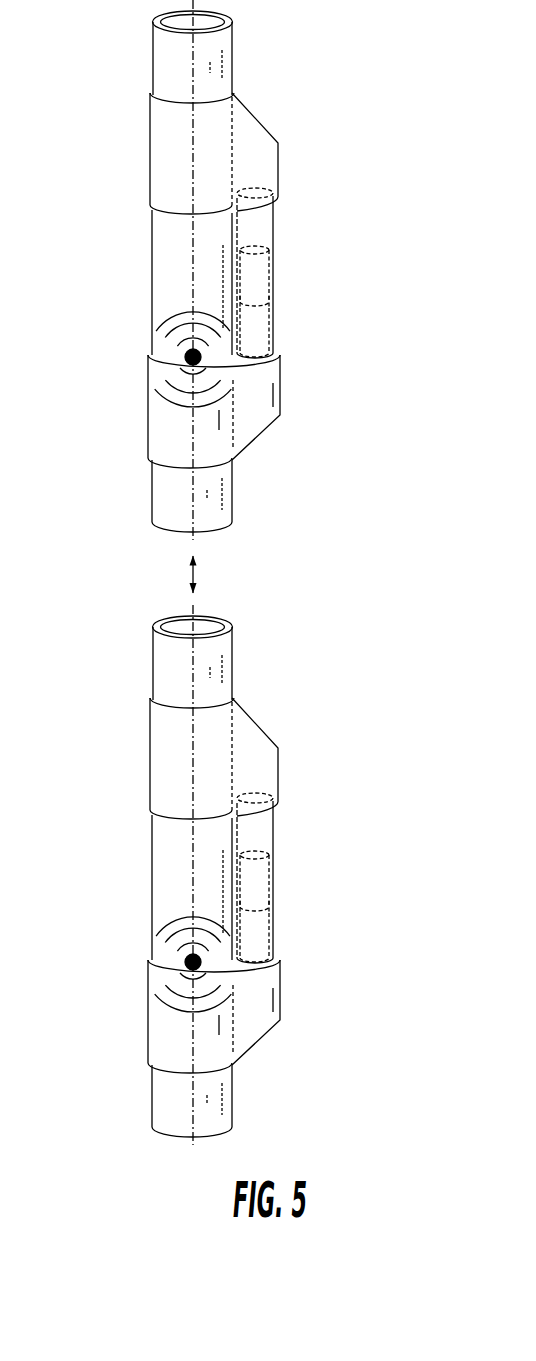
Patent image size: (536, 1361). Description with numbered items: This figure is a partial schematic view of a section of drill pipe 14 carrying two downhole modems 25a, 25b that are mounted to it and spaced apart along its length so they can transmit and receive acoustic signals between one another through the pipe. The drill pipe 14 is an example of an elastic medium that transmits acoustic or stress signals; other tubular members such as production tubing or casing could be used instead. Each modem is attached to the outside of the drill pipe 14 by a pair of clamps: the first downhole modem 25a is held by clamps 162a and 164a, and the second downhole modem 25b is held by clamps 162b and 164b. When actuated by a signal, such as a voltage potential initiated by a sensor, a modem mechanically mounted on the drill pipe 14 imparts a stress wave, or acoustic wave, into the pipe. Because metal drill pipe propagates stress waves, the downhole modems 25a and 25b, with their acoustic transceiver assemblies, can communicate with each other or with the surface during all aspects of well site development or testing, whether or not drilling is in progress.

The drill pipe 14 is at (232, 62).
The clamp 162a is at (232, 145).
The clamp 162b is at (248, 758).
The downhole modem 25a is at (244, 270).
The downhole modem 25b is at (237, 875).
The clamp 164a is at (245, 450).
The clamp 164b is at (249, 1020).